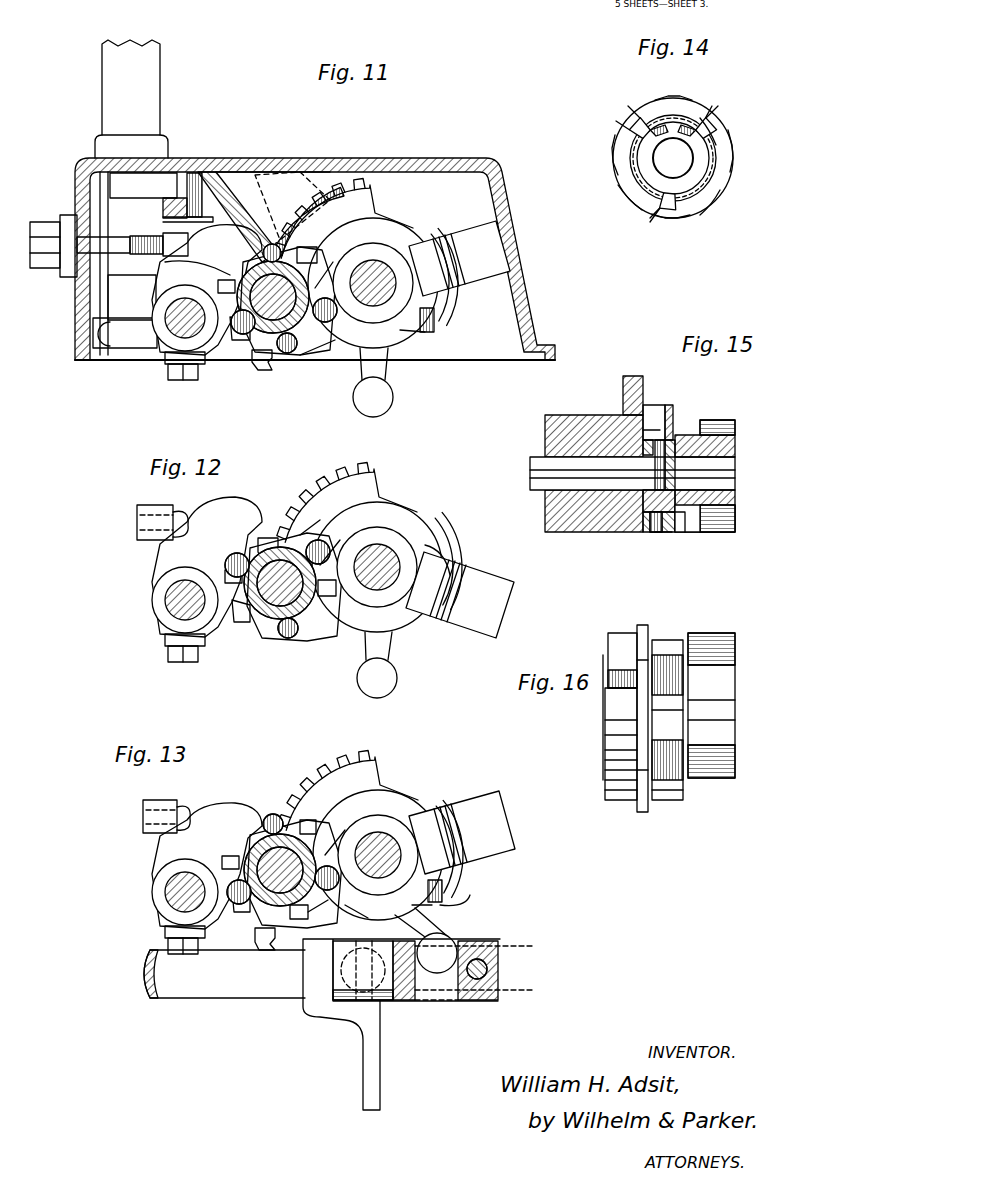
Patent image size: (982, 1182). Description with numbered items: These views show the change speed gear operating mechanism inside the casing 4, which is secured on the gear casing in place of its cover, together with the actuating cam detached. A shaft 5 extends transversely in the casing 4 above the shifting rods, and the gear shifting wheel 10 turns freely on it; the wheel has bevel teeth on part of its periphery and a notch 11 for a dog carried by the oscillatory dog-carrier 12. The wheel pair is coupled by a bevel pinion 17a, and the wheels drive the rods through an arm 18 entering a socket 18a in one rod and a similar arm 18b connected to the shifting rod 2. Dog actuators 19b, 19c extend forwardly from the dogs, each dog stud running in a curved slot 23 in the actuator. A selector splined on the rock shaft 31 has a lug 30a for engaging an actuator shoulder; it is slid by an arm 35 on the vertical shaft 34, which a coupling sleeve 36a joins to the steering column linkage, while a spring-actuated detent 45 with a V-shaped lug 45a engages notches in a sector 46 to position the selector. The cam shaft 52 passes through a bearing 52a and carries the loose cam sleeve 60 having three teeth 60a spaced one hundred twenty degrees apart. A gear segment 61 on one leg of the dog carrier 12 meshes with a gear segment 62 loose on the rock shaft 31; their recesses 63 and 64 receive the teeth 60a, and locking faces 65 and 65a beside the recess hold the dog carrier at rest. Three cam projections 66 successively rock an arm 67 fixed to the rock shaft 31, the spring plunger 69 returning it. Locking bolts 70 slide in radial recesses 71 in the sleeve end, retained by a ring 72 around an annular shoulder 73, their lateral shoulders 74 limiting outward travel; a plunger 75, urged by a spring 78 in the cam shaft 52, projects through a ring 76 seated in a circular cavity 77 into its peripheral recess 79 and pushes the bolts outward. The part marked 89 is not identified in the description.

In FIG. 13, the gear shifting rod 2 is at (224, 974).
In FIG. 11, the housing or casing 4 is at (500, 162).
In FIG. 15, the housing or casing 4 is at (626, 382).
In FIG. 11, the shaft 5 is at (382, 262).
In FIG. 12, the shaft 5 is at (388, 552).
In FIG. 13, the shaft 5 is at (390, 838).
In FIG. 11, the gear shifting wheel 10 is at (355, 264).
In FIG. 12, the gear shifting wheel 10 is at (359, 548).
In FIG. 13, the gear shifting wheel 10 is at (360, 836).
In FIG. 11, the notch 11 is at (404, 330).
In FIG. 13, the notch 11 is at (414, 905).
In FIG. 11, the oscillatory yoke or dog-carrier 12 is at (459, 258).
In FIG. 12, the oscillatory yoke or dog-carrier 12 is at (460, 595).
In FIG. 13, the oscillatory yoke or dog-carrier 12 is at (462, 832).
In FIG. 11, the bevel pinion 17a is at (322, 180).
In FIG. 13, the arm 18 is at (401, 1024).
In FIG. 13, the socket 18a is at (420, 1003).
In FIG. 11, the arm 18b is at (373, 382).
In FIG. 12, the arm 18b is at (377, 665).
In FIG. 13, the arm 18b is at (426, 940).
In FIG. 12, the dog actuator 19b is at (462, 548).
In FIG. 13, the dog actuator 19b is at (475, 898).
In FIG. 11, the dog actuator 19c is at (450, 322).
In FIG. 12, the dog actuator 19c is at (440, 532).
In FIG. 13, the dog actuator 19c is at (462, 885).
In FIG. 11, the curved slot 23 is at (450, 300).
In FIG. 12, the curved slot 23 is at (452, 560).
In FIG. 13, the curved slot 23 is at (462, 866).
In FIG. 11, the lug 30a is at (197, 270).
In FIG. 11, the rock shaft 31 is at (172, 335).
In FIG. 12, the rock shaft 31 is at (165, 597).
In FIG. 13, the rock shaft 31 is at (168, 896).
In FIG. 11, the vertical shaft 34 is at (125, 311).
In FIG. 11, the arm 35 is at (96, 246).
In FIG. 11, the coupling sleeve 36a is at (131, 99).
In FIG. 11, the spring-actuated detent or lever 45 is at (175, 200).
In FIG. 11, the V-shaped lug 45a is at (205, 198).
In FIG. 11, the sector 46 is at (196, 185).
In FIG. 11, the cam shaft 52 is at (295, 262).
In FIG. 12, the cam shaft 52 is at (300, 612).
In FIG. 13, the cam shaft 52 is at (283, 835).
In FIG. 15, the cam shaft 52 is at (632, 473).
In FIG. 15, the bearing 52a is at (555, 420).
In FIG. 11, the cam sleeve 60 is at (318, 352).
In FIG. 12, the cam sleeve 60 is at (310, 608).
In FIG. 13, the cam sleeve 60 is at (290, 928).
In FIG. 14, the cam sleeve 60 is at (612, 148).
In FIG. 15, the cam sleeve 60 is at (735, 445).
In FIG. 16, the cam sleeve 60 is at (726, 705).
In FIG. 11, the cam teeth or arms 60a is at (330, 312).
In FIG. 12, the cam teeth or arms 60a is at (240, 555).
In FIG. 13, the cam teeth or arms 60a is at (268, 815).
In FIG. 14, the cam teeth or arms 60a is at (664, 100).
In FIG. 15, the cam teeth or arms 60a is at (735, 425).
In FIG. 16, the cam teeth or arms 60a is at (735, 660).
In FIG. 11, the gear segment 61 is at (325, 345).
In FIG. 12, the gear segment 61 is at (297, 515).
In FIG. 13, the gear segment 61 is at (318, 910).
In FIG. 11, the gear segment 62 is at (263, 359).
In FIG. 12, the gear segment 62 is at (268, 538).
In FIG. 13, the gear segment 62 is at (263, 934).
In FIG. 11, the recess 63 is at (370, 283).
In FIG. 12, the recess 63 is at (377, 567).
In FIG. 13, the recess 63 is at (375, 855).
In FIG. 11, the recess 64 is at (238, 335).
In FIG. 12, the recess 64 is at (236, 605).
In FIG. 13, the recess 64 is at (236, 895).
In FIG. 13, the locking face 65 is at (363, 910).
In FIG. 11, the locking face 65a is at (338, 259).
In FIG. 12, the locking face 65a is at (346, 537).
In FIG. 13, the locking face 65a is at (346, 829).
In FIG. 11, the cam projection 66 is at (298, 372).
In FIG. 12, the cam projection 66 is at (246, 642).
In FIG. 13, the cam projection 66 is at (269, 864).
In FIG. 14, the cam projection 66 is at (700, 118).
In FIG. 15, the cam projection 66 is at (690, 532).
In FIG. 16, the cam projection 66 is at (668, 652).
In FIG. 11, the arm 67 is at (207, 290).
In FIG. 12, the arm 67 is at (207, 567).
In FIG. 13, the arm 67 is at (207, 866).
In FIG. 11, the spring plunger 69 is at (175, 244).
In FIG. 12, the spring plunger 69 is at (185, 515).
In FIG. 13, the spring plunger 69 is at (185, 808).
In FIG. 15, the locking bolt 70 is at (655, 405).
In FIG. 14, the radial recess 71 is at (632, 132).
In FIG. 15, the radial recess 71 is at (673, 420).
In FIG. 16, the radial recess 71 is at (612, 693).
In FIG. 15, the ring 72 is at (648, 512).
In FIG. 14, the annular shoulder 73 is at (712, 132).
In FIG. 15, the annular shoulder 73 is at (645, 520).
In FIG. 16, the annular shoulder 73 is at (606, 738).
In FIG. 15, the lateral shoulder 74 is at (645, 440).
In FIG. 15, the bolt actuating plunger 75 is at (655, 465).
In FIG. 15, the ring 76 is at (682, 534).
In FIG. 14, the circular cavity 77 is at (645, 190).
In FIG. 15, the circular cavity 77 is at (656, 532).
In FIG. 15, the spring 78 is at (676, 475).
In FIG. 15, the peripheral recess 79 is at (648, 432).
In FIG. 14, the plate 89 is at (688, 100).
In FIG. 15, the plate 89 is at (665, 534).
In FIG. 16, the plate 89 is at (639, 628).